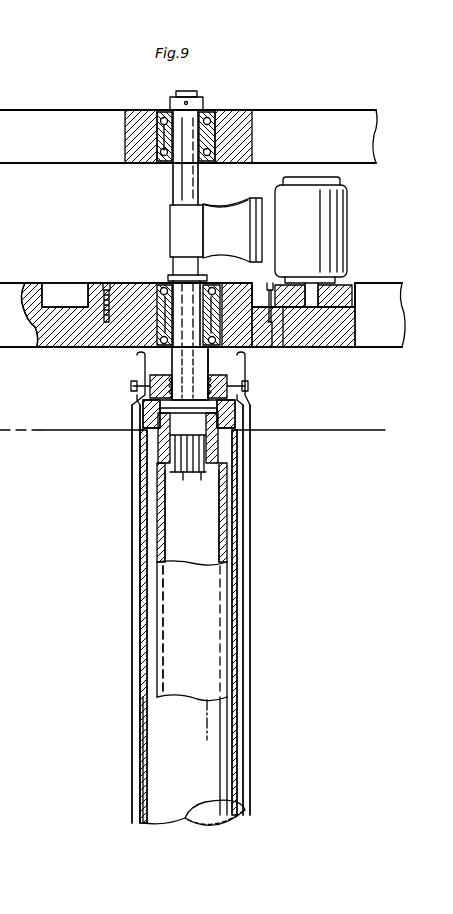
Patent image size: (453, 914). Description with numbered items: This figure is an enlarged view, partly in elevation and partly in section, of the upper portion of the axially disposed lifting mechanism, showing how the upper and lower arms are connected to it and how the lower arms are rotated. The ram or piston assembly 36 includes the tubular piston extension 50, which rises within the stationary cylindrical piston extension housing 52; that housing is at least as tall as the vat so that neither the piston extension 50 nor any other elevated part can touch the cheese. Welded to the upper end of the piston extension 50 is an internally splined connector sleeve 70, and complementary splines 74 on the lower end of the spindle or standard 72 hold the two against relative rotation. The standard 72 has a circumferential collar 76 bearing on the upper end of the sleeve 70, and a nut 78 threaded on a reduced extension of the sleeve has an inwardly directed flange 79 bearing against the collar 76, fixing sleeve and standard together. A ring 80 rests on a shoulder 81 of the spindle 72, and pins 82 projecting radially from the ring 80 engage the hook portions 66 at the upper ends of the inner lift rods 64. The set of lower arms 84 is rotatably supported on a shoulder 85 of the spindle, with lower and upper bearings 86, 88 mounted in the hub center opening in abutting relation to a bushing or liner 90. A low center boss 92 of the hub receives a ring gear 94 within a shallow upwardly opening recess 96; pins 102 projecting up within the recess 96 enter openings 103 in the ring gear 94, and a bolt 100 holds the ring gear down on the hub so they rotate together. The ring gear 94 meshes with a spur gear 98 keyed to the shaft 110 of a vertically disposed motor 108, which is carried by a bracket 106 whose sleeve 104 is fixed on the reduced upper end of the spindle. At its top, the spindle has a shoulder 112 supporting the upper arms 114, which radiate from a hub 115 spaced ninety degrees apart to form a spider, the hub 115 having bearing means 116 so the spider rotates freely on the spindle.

The ram or piston assembly 36 is at (176, 675).
The tubular piston extension 50 is at (156, 583).
The piston extension housing 52 is at (186, 814).
The inner lift rods 64 is at (134, 606).
The hook portions 66 is at (134, 364).
The connector sleeve 70 is at (158, 444).
The spindle or standard 72 is at (182, 480).
The splines 74 is at (193, 472).
The circumferential collar 76 is at (202, 432).
The nut 78 is at (145, 420).
The inwardly directed flange 79 is at (184, 390).
The ring 80 is at (143, 394).
The shoulder 81 is at (204, 382).
The pins 82 is at (122, 387).
The lower arms 84 is at (384, 284).
The shoulder 85 is at (183, 337).
The lower bearing 86 is at (112, 347).
The upper bearing 88 is at (152, 284).
The bushing or liner 90 is at (163, 326).
The center boss 92 is at (236, 275).
The ring gear 94 is at (72, 298).
The recess 96 is at (52, 302).
The spur gear 98 is at (335, 324).
The bolt 100 is at (104, 283).
The pins 102 is at (283, 330).
The openings 103 is at (276, 276).
The sleeve 104 is at (172, 216).
The bracket 106 is at (233, 205).
The motor 108 is at (338, 250).
The motor shaft 110 is at (344, 300).
The shoulder 112 is at (183, 130).
The upper arms 114 is at (80, 120).
The hub 115 is at (231, 119).
The bearing means 116 is at (156, 132).